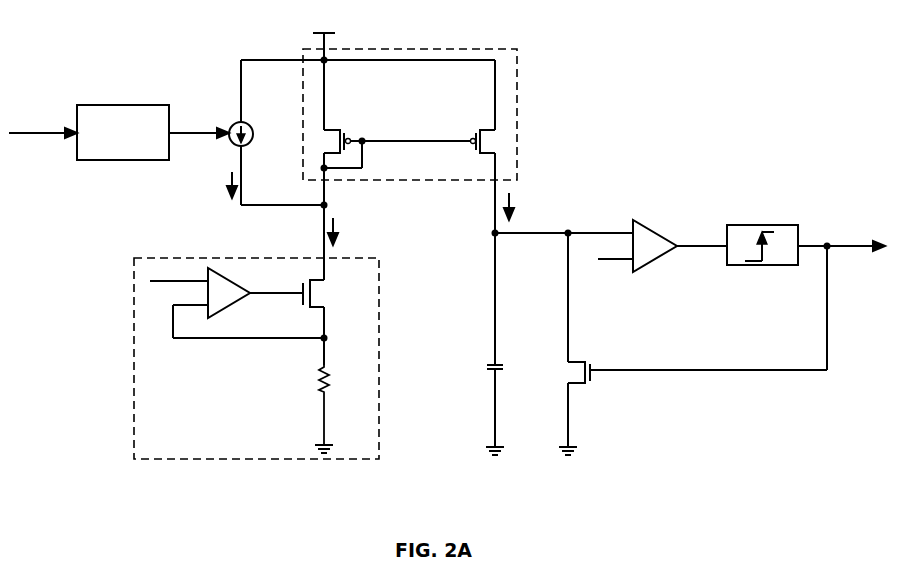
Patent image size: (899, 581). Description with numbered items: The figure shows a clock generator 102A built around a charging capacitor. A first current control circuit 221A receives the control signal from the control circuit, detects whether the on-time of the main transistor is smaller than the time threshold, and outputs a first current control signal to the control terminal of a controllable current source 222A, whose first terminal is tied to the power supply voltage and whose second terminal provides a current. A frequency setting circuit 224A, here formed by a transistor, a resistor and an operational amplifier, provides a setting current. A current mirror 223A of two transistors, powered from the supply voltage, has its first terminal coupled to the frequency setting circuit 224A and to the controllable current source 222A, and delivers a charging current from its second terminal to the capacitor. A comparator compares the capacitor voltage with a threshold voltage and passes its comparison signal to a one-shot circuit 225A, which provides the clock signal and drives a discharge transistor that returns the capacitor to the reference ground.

The clock generator 102A is at (447, 247).
The first current control circuit 221A is at (95, 161).
The controllable current source 222A is at (253, 139).
The current mirror 223A is at (515, 90).
The frequency setting circuit 224A is at (163, 462).
The one-shot circuit 225A is at (745, 266).